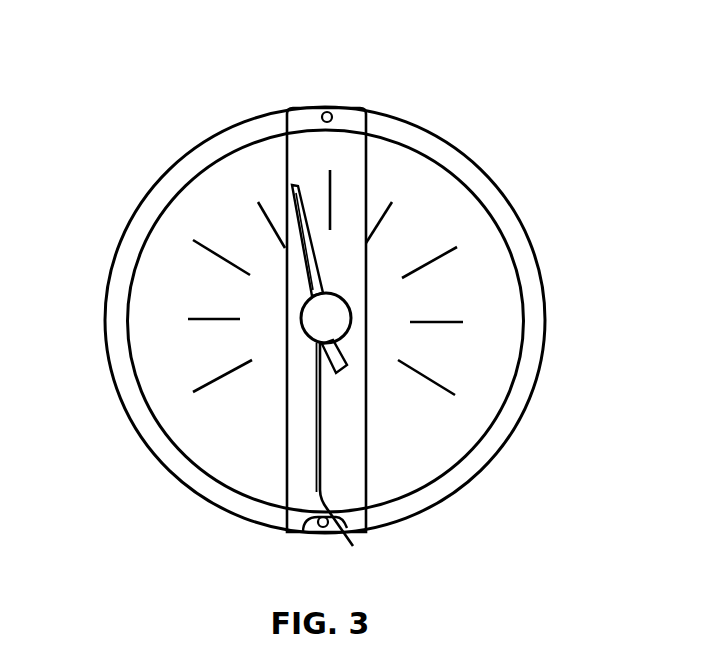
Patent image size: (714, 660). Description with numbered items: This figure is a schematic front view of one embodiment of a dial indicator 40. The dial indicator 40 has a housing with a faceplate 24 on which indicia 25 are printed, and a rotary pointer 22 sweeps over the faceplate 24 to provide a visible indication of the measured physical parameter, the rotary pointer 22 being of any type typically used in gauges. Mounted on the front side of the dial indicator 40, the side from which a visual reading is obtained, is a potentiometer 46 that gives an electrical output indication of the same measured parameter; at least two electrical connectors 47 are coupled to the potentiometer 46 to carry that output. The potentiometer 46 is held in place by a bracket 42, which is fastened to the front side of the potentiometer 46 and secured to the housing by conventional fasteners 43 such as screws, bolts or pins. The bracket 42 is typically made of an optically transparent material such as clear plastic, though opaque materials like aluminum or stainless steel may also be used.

The dial indicator 40 is at (430, 113).
The rotary pointer 22 is at (287, 263).
The faceplate 24 is at (185, 356).
The indicia 25 is at (485, 248).
The bracket 42 is at (287, 425).
The fasteners 43 is at (300, 532).
The potentiometer 46 is at (301, 307).
The electrical connectors 47 is at (320, 467).